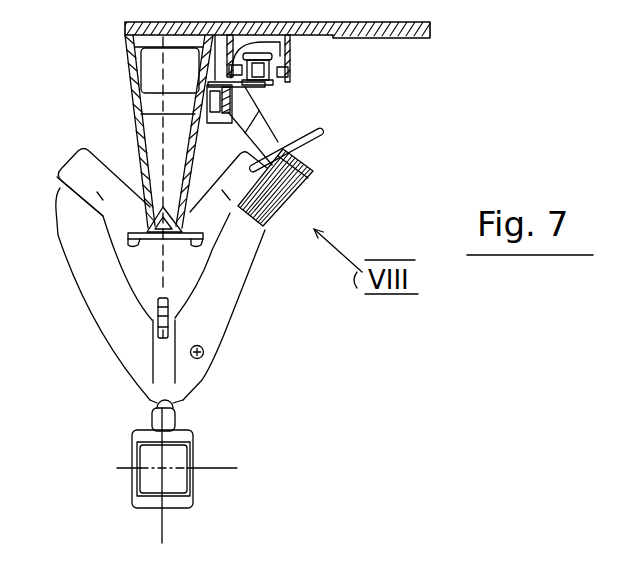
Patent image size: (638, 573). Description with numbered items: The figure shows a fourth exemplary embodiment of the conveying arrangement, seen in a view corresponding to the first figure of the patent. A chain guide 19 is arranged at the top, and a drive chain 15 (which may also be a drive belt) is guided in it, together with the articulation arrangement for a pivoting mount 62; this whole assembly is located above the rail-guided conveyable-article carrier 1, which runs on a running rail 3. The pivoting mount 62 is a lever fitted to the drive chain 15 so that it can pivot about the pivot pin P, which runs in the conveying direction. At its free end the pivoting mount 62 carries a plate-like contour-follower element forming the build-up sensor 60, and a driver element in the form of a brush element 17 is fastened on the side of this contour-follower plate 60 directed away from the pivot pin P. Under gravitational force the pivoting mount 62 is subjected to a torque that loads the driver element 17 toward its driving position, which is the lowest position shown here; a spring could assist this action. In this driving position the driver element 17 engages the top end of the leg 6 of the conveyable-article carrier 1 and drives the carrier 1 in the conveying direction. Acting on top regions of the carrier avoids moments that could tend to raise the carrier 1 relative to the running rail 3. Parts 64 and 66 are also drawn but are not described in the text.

The conveyable-article carrier 1 is at (91, 342).
The running rail 3 is at (3, 562).
The leg 6 is at (240, 249).
The drive chain 15 is at (268, 85).
The driver element 17 is at (292, 205).
The chain guide 19 is at (293, 50).
The build-up sensor 60 is at (311, 126).
The pivoting mount 62 is at (229, 132).
The base block 64 is at (177, 490).
The component 66 is at (326, 572).
The pivot pin P is at (227, 115).